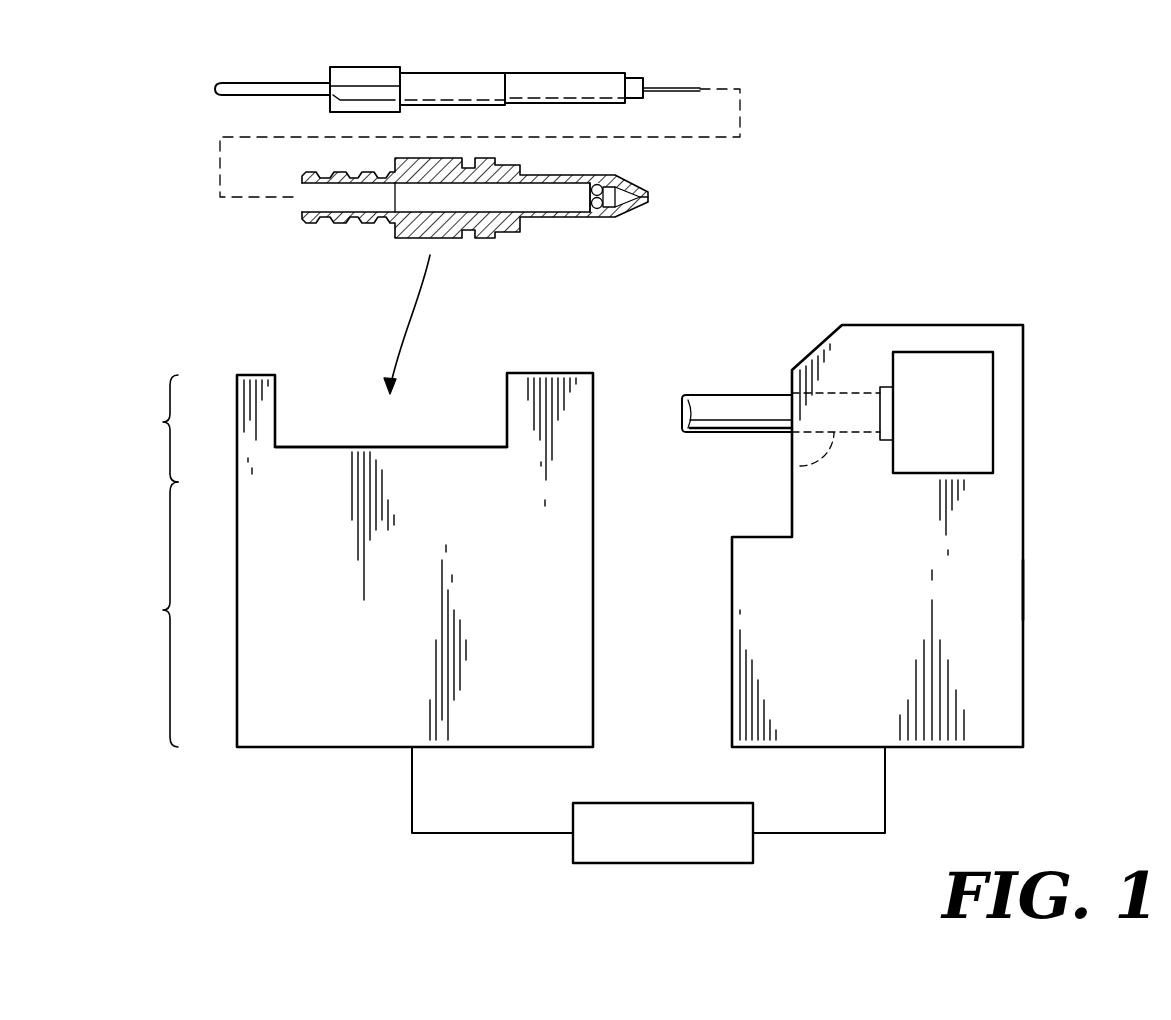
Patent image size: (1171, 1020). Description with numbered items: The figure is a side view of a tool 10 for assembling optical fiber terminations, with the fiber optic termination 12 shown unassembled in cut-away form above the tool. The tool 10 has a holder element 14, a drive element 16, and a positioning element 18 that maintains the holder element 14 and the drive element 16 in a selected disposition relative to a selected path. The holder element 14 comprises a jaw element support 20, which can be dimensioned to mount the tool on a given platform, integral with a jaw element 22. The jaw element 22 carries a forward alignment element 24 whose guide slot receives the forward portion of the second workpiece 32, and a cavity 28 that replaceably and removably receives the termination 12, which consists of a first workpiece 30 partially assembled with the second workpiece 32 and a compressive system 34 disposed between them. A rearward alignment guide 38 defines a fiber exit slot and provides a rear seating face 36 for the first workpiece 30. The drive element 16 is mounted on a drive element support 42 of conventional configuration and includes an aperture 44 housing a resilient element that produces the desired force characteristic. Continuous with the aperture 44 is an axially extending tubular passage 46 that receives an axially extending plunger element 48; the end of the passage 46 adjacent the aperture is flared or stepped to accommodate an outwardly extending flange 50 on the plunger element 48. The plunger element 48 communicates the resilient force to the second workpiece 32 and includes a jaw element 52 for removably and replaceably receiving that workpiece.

The tool 10 is at (1084, 332).
The fiber optic termination 12 is at (778, 85).
The holder element 14 is at (226, 520).
The drive element 16 is at (1034, 407).
The positioning element 18 is at (671, 845).
The jaw element support 20 is at (157, 614).
The jaw element 22 is at (157, 428).
The forward alignment element 24 is at (560, 373).
The cavity 28 is at (394, 430).
The first workpiece 30 is at (600, 68).
The second workpiece 32 is at (644, 211).
The compressive system 34 is at (601, 185).
The rear seating face 36 is at (284, 394).
The rearward alignment guide 38 is at (258, 375).
The drive element support 42 is at (1034, 589).
The aperture 44 is at (954, 413).
The tubular passage 46 is at (800, 466).
The plunger element 48 is at (748, 400).
The flange 50 is at (885, 387).
The jaw element 52 is at (683, 415).